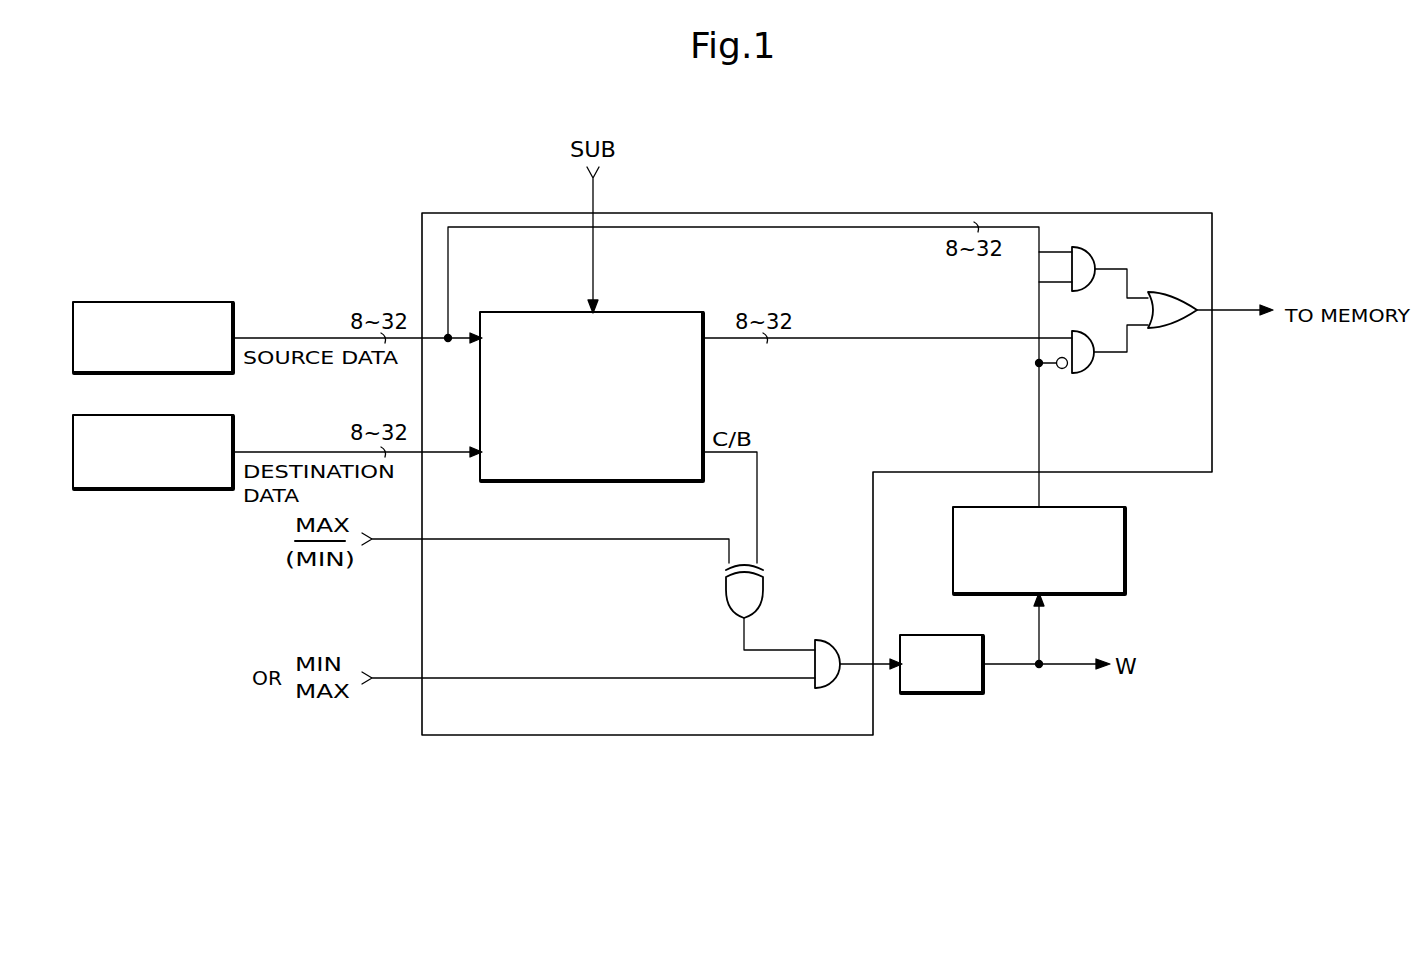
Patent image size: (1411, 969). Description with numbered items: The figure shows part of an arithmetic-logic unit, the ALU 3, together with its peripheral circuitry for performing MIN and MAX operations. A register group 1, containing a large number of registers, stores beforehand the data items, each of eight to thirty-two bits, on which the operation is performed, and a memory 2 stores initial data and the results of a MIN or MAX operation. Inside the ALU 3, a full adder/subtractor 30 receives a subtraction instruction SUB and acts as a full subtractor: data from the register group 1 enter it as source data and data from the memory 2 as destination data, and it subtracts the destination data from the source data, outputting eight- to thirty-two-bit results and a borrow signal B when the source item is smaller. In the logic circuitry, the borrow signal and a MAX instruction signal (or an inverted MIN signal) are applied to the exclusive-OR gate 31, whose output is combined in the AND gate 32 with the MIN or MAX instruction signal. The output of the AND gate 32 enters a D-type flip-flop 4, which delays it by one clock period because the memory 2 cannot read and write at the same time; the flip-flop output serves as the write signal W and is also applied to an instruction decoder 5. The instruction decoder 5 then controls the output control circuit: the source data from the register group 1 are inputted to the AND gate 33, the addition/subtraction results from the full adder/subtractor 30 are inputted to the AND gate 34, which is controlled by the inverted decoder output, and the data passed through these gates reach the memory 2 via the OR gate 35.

The register group 1 is at (178, 300).
The memory 2 is at (165, 413).
The ALU 3 is at (740, 735).
The D-type flip-flop 4 is at (930, 692).
The instruction decoder 5 is at (1125, 553).
The full adder/subtractor 30 is at (706, 388).
The exclusive-OR gate 31 is at (724, 587).
The AND gate 32 is at (846, 624).
The AND gate 33 is at (1080, 247).
The AND gate 34 is at (1088, 372).
The OR gate 35 is at (1168, 292).